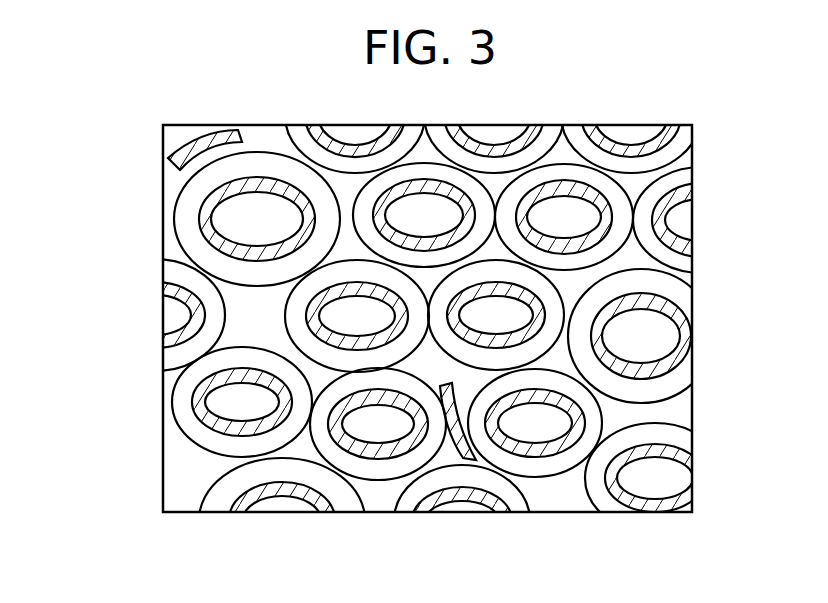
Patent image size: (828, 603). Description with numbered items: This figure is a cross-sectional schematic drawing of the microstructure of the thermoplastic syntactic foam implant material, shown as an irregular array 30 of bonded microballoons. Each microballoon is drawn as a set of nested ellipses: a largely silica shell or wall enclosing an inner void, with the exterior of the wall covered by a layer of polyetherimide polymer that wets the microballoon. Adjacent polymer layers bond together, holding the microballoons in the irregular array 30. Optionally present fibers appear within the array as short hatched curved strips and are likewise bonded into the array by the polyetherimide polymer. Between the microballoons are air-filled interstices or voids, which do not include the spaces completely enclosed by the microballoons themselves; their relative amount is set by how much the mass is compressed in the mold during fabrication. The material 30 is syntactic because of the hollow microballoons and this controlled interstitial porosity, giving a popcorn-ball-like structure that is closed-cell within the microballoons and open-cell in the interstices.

The array 30 is at (118, 346).